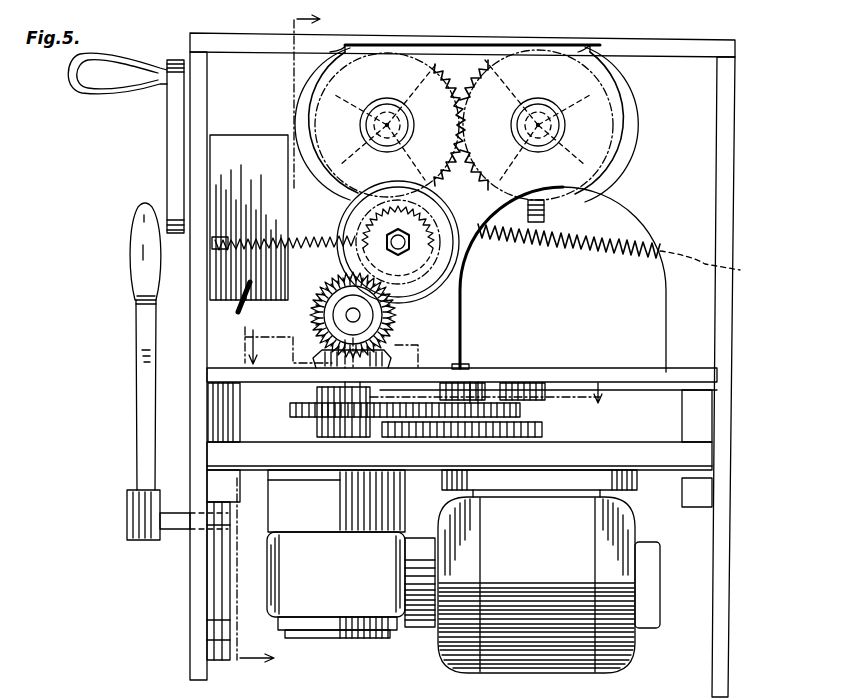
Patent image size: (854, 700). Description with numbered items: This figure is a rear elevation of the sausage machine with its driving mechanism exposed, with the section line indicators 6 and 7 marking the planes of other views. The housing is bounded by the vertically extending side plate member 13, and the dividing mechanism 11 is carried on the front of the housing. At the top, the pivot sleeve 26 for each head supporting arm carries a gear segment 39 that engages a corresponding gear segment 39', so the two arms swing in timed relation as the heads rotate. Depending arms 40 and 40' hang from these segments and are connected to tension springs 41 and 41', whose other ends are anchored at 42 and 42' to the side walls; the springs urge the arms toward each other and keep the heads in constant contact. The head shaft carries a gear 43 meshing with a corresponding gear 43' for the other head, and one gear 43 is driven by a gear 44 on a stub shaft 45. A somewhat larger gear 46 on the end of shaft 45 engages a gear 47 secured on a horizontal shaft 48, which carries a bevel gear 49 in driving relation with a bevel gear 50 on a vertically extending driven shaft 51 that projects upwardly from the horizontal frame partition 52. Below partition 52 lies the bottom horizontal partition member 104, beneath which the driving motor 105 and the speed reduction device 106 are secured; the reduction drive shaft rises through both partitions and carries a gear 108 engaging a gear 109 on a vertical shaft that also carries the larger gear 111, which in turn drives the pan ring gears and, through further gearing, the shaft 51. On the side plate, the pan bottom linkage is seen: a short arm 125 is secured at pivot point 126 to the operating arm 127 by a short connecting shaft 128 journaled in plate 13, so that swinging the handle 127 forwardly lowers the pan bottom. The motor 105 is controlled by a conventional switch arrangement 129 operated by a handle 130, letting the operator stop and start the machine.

The section line 6- 6 is at (430, 367).
The section line 7- 7 is at (278, 347).
The dividing mechanism 11 is at (722, 406).
The side plate member 13 is at (192, 353).
The pivot sleeve 26 is at (360, 126).
The gear segment 39 is at (390, 104).
The gear segment 39' is at (536, 106).
The depending arm 40 is at (325, 128).
The depending arm 40' is at (610, 124).
The tension spring 41 is at (285, 260).
The tension spring 41' is at (569, 240).
The spring connection 42 is at (231, 259).
The spring connection 42' is at (714, 265).
The gear 43 is at (341, 32).
The gear 43' is at (601, 34).
The gear 44 is at (440, 262).
The stub shaft 45 is at (412, 244).
The larger gear 46 is at (440, 303).
The gear 47 is at (326, 292).
The horizontal shaft 48 is at (346, 316).
The bevel gear 49 is at (316, 346).
The bevel gear 50 is at (392, 350).
The driven shaft 51 is at (345, 375).
The horizontal frame partition 52 is at (610, 372).
The bottom horizontal partition member 104 is at (658, 470).
The driving motor 105 is at (560, 672).
The speed reduction device 106 is at (344, 614).
The gear 108 is at (290, 410).
The gear 109 is at (505, 398).
The larger gear 111 is at (542, 426).
The short arm 125 is at (222, 578).
The pivot point 126 is at (222, 528).
The operating arm 127 is at (142, 375).
The connecting shaft 128 is at (170, 532).
The switch arrangement 129 is at (243, 148).
The handle 130 is at (167, 153).